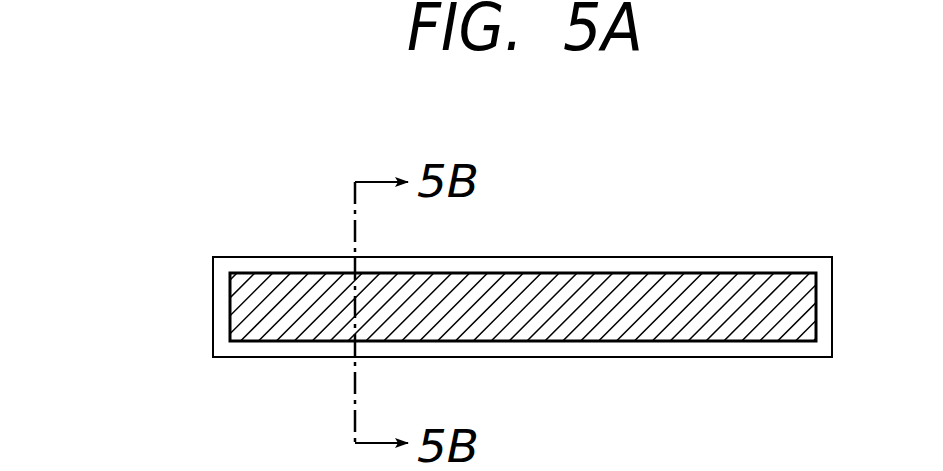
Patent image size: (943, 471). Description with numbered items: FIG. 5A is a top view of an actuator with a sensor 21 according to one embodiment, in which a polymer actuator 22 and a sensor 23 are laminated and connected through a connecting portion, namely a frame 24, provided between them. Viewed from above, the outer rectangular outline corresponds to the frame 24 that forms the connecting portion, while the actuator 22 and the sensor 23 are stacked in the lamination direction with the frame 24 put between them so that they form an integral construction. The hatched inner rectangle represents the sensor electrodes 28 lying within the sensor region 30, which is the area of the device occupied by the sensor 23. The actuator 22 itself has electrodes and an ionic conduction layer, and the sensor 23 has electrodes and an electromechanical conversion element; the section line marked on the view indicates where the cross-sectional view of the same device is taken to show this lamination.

The actuator with a sensor 21 is at (459, 268).
The actuator 22 is at (435, 278).
The sensor 23 is at (522, 307).
The frame 24 is at (226, 353).
The sensor electrodes 28 is at (592, 287).
The sensor region 30 is at (667, 341).